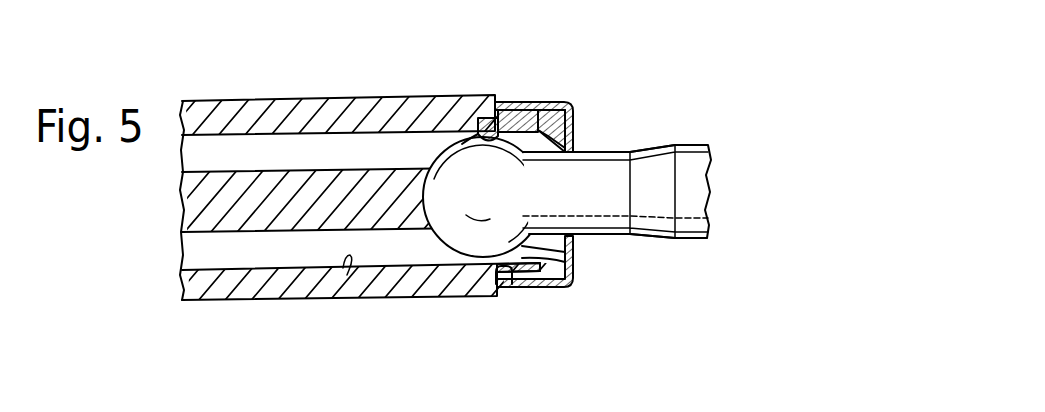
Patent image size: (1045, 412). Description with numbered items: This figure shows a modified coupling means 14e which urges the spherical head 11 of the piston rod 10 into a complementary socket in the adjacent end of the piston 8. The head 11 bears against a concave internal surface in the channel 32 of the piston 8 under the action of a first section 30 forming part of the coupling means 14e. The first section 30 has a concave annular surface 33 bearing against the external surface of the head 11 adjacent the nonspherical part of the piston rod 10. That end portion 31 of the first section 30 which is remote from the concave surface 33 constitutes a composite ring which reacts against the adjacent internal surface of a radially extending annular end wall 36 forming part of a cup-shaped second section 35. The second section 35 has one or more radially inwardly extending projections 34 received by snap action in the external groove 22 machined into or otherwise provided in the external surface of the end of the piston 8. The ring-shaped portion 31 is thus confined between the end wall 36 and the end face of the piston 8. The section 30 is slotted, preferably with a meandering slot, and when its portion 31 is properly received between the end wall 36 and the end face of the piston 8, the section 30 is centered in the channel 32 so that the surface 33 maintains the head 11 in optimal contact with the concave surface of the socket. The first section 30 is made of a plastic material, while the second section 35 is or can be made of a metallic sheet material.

The piston 8 is at (384, 290).
The piston rod 10 is at (698, 145).
The head 11 is at (440, 252).
The coupling means 14e is at (595, 125).
The external groove 22 is at (494, 268).
The first section 30 is at (551, 280).
The end portion 31 is at (578, 118).
The channel 32 is at (343, 268).
The concave annular surface 33 is at (478, 118).
The radially inwardly extending projections 34 is at (506, 108).
The cup-shaped second section 35 is at (546, 110).
The annular end wall 36 is at (575, 262).